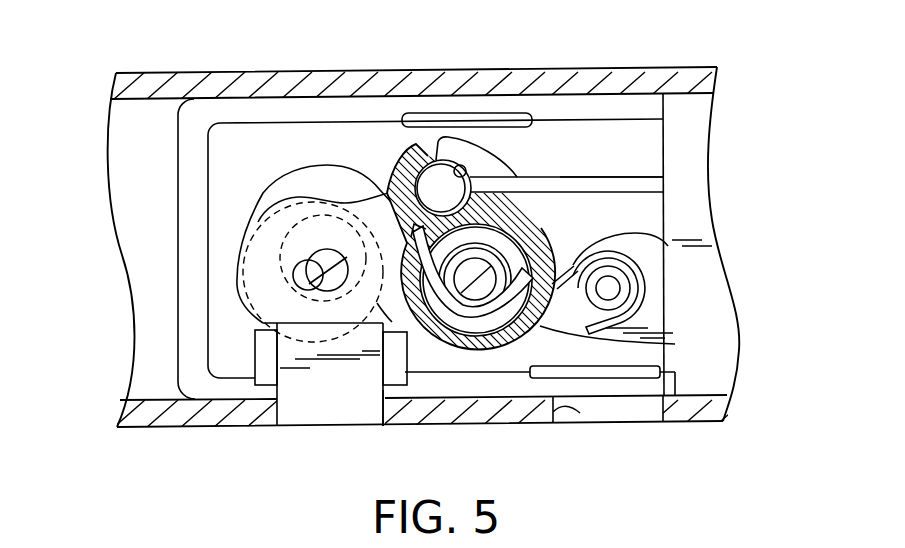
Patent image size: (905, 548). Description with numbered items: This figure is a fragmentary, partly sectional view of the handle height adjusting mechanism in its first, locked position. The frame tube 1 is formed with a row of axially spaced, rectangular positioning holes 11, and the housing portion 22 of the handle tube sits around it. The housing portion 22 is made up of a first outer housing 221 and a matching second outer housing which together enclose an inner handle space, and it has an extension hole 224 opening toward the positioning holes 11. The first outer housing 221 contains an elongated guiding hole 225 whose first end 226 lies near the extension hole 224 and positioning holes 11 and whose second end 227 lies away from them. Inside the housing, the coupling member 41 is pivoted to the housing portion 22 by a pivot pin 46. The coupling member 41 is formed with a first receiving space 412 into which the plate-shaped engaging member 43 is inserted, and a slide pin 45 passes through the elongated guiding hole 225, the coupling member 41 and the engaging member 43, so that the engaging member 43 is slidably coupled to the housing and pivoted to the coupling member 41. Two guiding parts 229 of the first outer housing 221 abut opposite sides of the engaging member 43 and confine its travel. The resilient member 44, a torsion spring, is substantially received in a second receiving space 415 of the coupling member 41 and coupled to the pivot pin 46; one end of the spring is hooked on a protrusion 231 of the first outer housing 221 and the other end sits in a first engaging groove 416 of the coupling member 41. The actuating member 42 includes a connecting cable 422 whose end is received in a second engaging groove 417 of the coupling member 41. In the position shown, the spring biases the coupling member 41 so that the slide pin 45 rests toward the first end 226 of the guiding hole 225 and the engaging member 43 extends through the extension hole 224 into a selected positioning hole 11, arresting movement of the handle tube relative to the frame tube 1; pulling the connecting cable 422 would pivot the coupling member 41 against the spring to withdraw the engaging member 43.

The frame tube 1 is at (627, 433).
The positioning holes 11 is at (279, 412).
The housing portion 22 is at (200, 62).
The first outer housing 221 is at (190, 172).
The extension hole 224 is at (383, 392).
The elongated guiding hole 225 is at (286, 228).
The first end 226 is at (298, 290).
The second end 227 is at (330, 215).
The guiding parts 229 is at (262, 345).
The protrusion 231 is at (610, 288).
The coupling member 41 is at (500, 330).
The first receiving space 412 is at (300, 275).
The second receiving space 415 is at (645, 346).
The first engaging groove 416 is at (423, 208).
The second engaging groove 417 is at (455, 165).
The actuating member 42 is at (562, 175).
The connecting cable 422 is at (607, 184).
The engaging member 43 is at (313, 390).
The resilient member 44 is at (572, 266).
The slide pin 45 is at (318, 265).
The pivot pin 46 is at (477, 290).